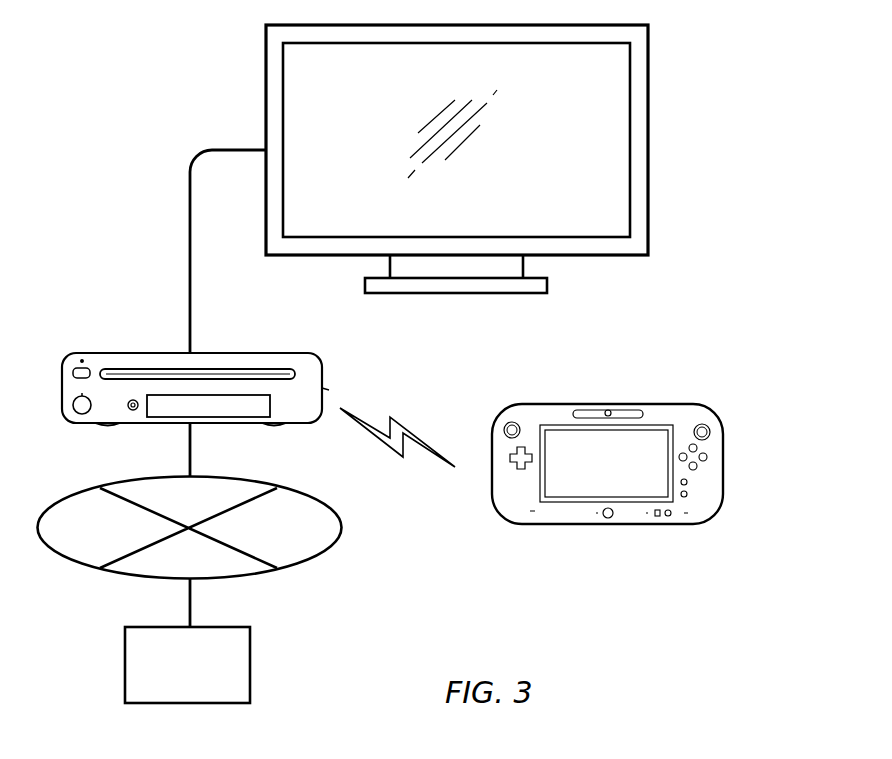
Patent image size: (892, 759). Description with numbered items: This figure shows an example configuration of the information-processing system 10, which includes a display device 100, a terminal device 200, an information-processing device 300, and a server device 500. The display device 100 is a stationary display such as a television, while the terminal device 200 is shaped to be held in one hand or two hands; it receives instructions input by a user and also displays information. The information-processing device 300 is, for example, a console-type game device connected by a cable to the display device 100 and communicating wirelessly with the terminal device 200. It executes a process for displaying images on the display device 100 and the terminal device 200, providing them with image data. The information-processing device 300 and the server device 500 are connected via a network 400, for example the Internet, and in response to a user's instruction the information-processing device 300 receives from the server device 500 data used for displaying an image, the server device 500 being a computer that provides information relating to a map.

The information-processing system 10 is at (80, 82).
The display device 100 is at (266, 77).
The terminal device 200 is at (645, 404).
The information-processing device 300 is at (138, 352).
The network 400 is at (341, 522).
The server device 500 is at (250, 652).